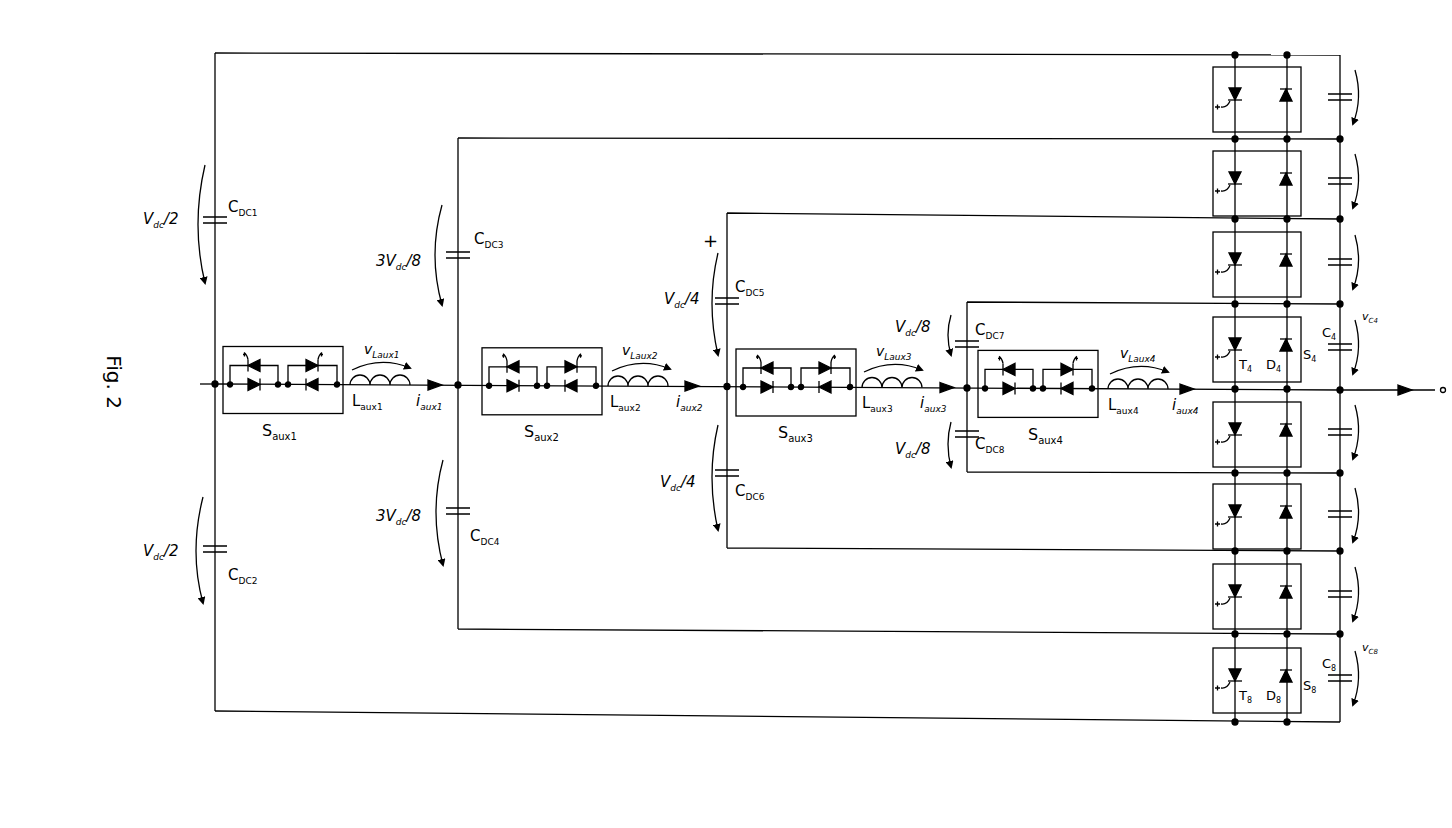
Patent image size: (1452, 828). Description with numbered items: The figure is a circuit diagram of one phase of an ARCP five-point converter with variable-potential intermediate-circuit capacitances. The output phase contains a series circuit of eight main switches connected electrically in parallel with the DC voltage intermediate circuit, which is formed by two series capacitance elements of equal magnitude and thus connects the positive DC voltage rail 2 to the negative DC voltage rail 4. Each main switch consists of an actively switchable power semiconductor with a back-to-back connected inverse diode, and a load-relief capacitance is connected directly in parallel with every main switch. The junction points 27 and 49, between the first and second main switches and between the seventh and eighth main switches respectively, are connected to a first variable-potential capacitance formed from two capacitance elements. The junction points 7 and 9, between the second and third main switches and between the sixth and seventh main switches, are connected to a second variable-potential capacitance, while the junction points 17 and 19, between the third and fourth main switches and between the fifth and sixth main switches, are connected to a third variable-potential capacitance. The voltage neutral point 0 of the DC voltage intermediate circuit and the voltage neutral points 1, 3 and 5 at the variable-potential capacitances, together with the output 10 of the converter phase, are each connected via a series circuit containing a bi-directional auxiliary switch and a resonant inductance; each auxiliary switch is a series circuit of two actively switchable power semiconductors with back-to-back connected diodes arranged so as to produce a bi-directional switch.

The voltage neutral point 0 is at (207, 375).
The voltage neutral point 1 is at (453, 375).
The positive DC voltage rail 2 is at (777, 40).
The voltage neutral point 3 is at (721, 377).
The negative DC voltage rail 4 is at (777, 729).
The voltage neutral point 5 is at (961, 378).
The junction point 7 is at (1295, 181).
The junction point 9 is at (1295, 514).
The output 10 is at (1393, 376).
The junction point 17 is at (1295, 263).
The junction point 19 is at (1295, 432).
The junction point 27 is at (1295, 99).
The junction point 49 is at (1295, 594).